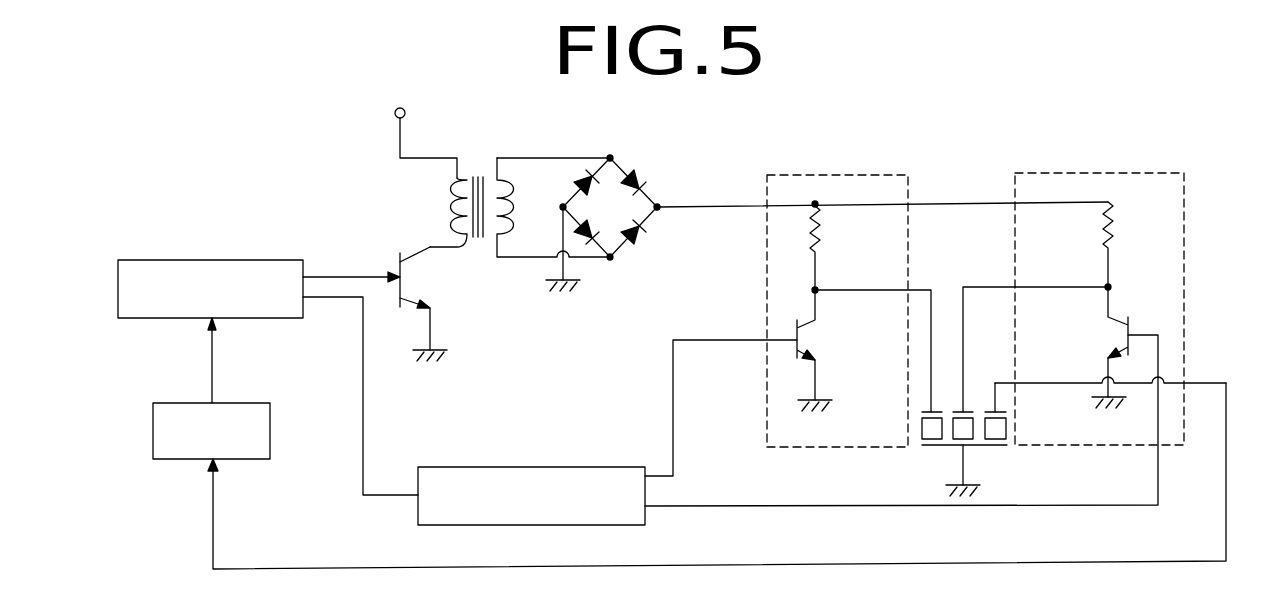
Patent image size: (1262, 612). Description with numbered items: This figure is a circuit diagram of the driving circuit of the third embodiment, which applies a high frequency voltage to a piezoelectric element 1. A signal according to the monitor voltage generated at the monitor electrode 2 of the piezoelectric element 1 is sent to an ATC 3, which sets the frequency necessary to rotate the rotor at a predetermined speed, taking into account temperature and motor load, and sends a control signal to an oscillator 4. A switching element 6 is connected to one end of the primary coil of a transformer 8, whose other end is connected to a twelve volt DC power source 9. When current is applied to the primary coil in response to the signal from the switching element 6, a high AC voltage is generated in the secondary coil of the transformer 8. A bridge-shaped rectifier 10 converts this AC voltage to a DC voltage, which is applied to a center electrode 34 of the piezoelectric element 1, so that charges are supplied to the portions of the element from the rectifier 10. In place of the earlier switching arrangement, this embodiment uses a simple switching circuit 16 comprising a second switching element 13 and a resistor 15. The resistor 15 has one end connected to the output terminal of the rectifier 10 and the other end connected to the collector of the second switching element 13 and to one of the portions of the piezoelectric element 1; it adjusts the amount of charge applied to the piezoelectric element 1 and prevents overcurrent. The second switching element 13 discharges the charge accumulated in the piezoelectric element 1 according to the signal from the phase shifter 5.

The piezoelectric element 1 is at (923, 462).
The monitor electrode 2 is at (1002, 408).
The ATC 3 is at (182, 403).
The oscillator 4 is at (168, 260).
The phase shifter 5 is at (480, 467).
The switching element 6 is at (400, 260).
The transformer 8 is at (477, 173).
The DC power source 9 is at (397, 118).
The bridge-shaped rectifier 10 is at (658, 200).
The second switching element 13 is at (813, 333).
The resistor 15 is at (822, 231).
The switching circuit 16 is at (842, 450).
The center electrode 34 is at (993, 445).